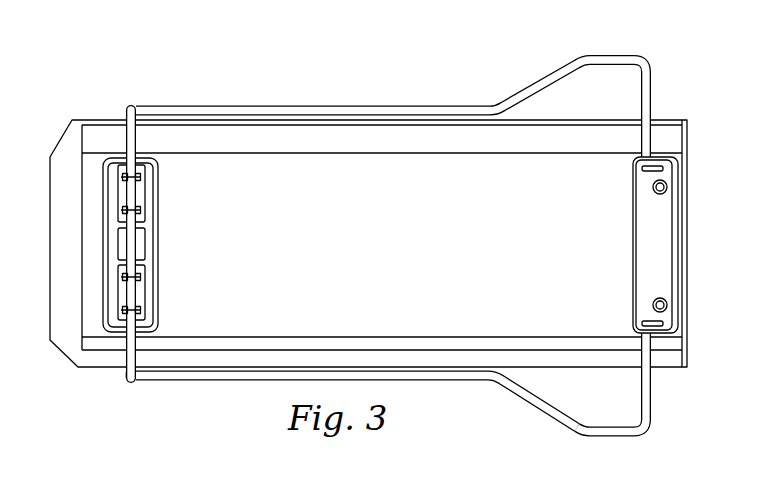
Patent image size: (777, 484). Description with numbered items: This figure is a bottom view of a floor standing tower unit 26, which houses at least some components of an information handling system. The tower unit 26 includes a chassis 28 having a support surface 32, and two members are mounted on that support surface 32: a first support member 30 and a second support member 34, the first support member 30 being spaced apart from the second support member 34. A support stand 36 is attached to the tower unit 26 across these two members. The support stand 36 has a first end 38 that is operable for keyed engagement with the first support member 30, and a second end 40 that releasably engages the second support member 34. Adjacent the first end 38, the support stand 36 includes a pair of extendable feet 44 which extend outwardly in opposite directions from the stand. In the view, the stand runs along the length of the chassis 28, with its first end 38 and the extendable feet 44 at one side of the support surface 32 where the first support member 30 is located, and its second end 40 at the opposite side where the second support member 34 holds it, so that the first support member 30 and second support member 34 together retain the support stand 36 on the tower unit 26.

The tower unit 26 is at (392, 232).
The chassis 28 is at (106, 118).
The first support member 30 is at (632, 240).
The support surface 32 is at (400, 260).
The second support member 34 is at (160, 240).
The support stand 36 is at (537, 410).
The first end 38 is at (653, 100).
The second end 40 is at (125, 375).
The extendable feet 44 is at (612, 53).